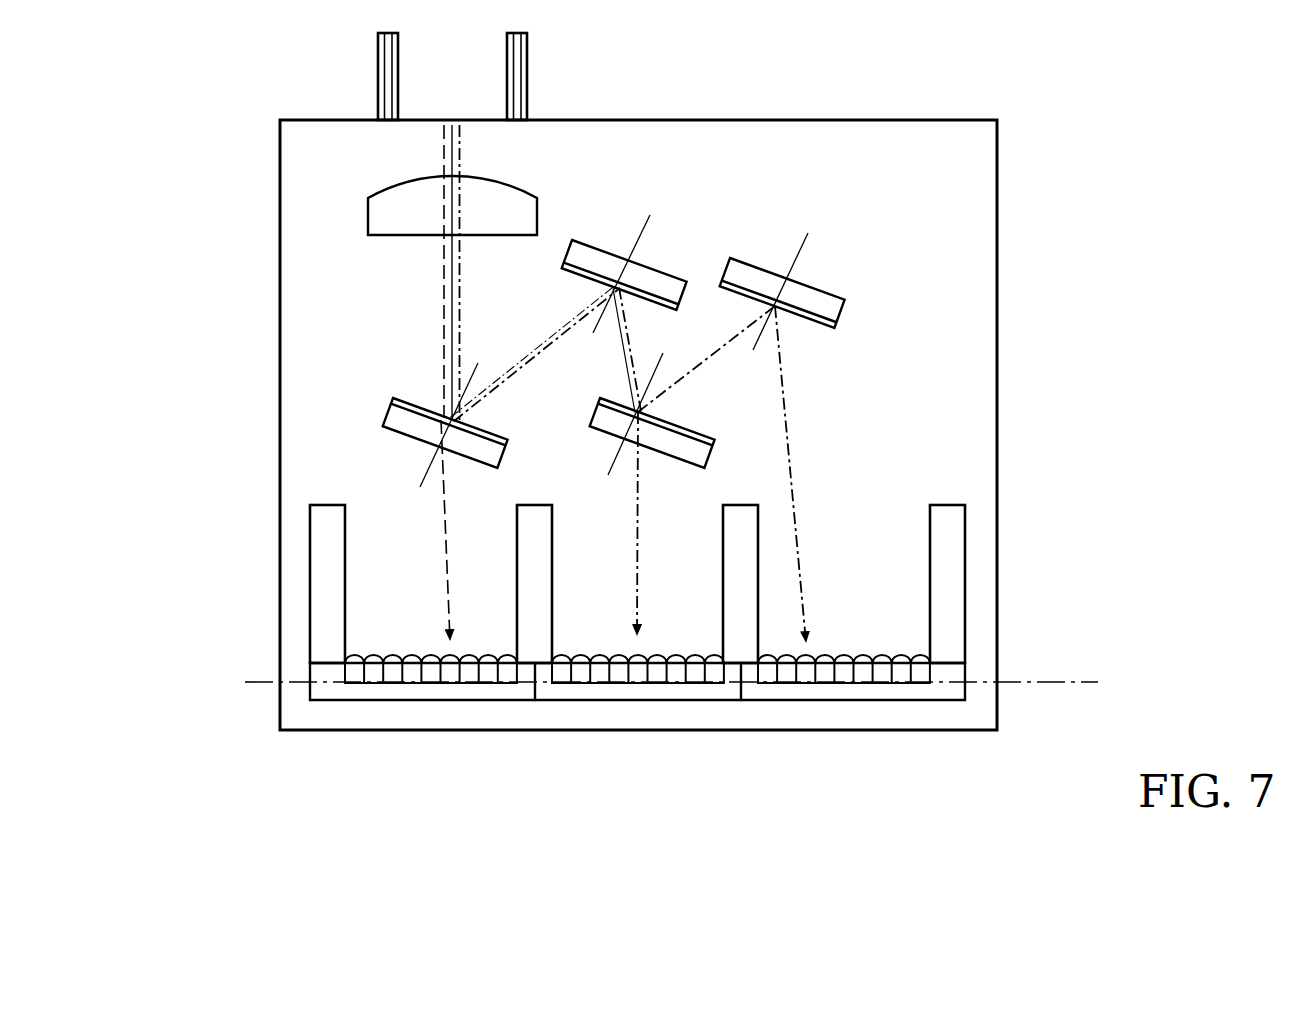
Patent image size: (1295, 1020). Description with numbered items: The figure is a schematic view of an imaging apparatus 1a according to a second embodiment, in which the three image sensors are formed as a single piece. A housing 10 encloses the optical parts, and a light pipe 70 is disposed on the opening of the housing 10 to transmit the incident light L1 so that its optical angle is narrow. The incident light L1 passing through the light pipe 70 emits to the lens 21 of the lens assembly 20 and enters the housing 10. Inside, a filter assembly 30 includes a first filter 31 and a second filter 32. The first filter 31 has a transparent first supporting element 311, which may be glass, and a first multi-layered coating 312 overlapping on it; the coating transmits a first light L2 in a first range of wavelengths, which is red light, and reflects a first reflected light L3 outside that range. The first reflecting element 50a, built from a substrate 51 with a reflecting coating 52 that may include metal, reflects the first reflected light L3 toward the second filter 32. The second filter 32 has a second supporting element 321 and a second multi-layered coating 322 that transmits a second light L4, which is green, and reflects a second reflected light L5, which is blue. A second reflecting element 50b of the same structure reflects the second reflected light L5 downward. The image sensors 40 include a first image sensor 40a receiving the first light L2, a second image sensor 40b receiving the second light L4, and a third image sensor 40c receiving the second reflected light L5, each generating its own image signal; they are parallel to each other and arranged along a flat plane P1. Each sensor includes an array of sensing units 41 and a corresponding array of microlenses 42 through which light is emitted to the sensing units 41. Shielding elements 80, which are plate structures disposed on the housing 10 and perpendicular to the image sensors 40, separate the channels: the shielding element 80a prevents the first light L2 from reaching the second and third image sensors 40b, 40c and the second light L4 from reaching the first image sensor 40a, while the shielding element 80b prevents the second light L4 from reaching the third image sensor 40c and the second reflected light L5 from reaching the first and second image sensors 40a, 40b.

The imaging apparatus 1a is at (1036, 75).
The housing 10 is at (280, 178).
The light pipe 70 is at (527, 75).
The lens assembly 20 is at (416, 229).
The lens 21 is at (368, 201).
The filter assembly 30 is at (402, 398).
The first filter 31 is at (411, 398).
The first supporting element 311 is at (396, 417).
The first multi-layered coating 312 is at (420, 403).
The second filter 32 is at (687, 414).
The second supporting element 321 is at (702, 458).
The second multi-layered coating 322 is at (661, 420).
The image sensors 40 is at (582, 715).
The first image sensor 40a is at (480, 780).
The second image sensor 40b is at (688, 780).
The third image sensor 40c is at (893, 780).
The sensing units 41 is at (452, 672).
The microlenses 42 is at (432, 662).
The first reflecting element 50a is at (655, 236).
The substrate 51 is at (648, 278).
The reflecting coating 52 is at (665, 300).
The second reflecting element 50b is at (839, 282).
The shielding elements 80 is at (304, 559).
The shielding element 80a is at (535, 505).
The shielding element 80b is at (722, 540).
The incident light L1 is at (441, 284).
The first light L2 is at (444, 540).
The first reflected light L3 is at (548, 338).
The second light L4 is at (635, 600).
The second reflected light L5 is at (726, 338).
The flat plane P1 is at (1083, 680).